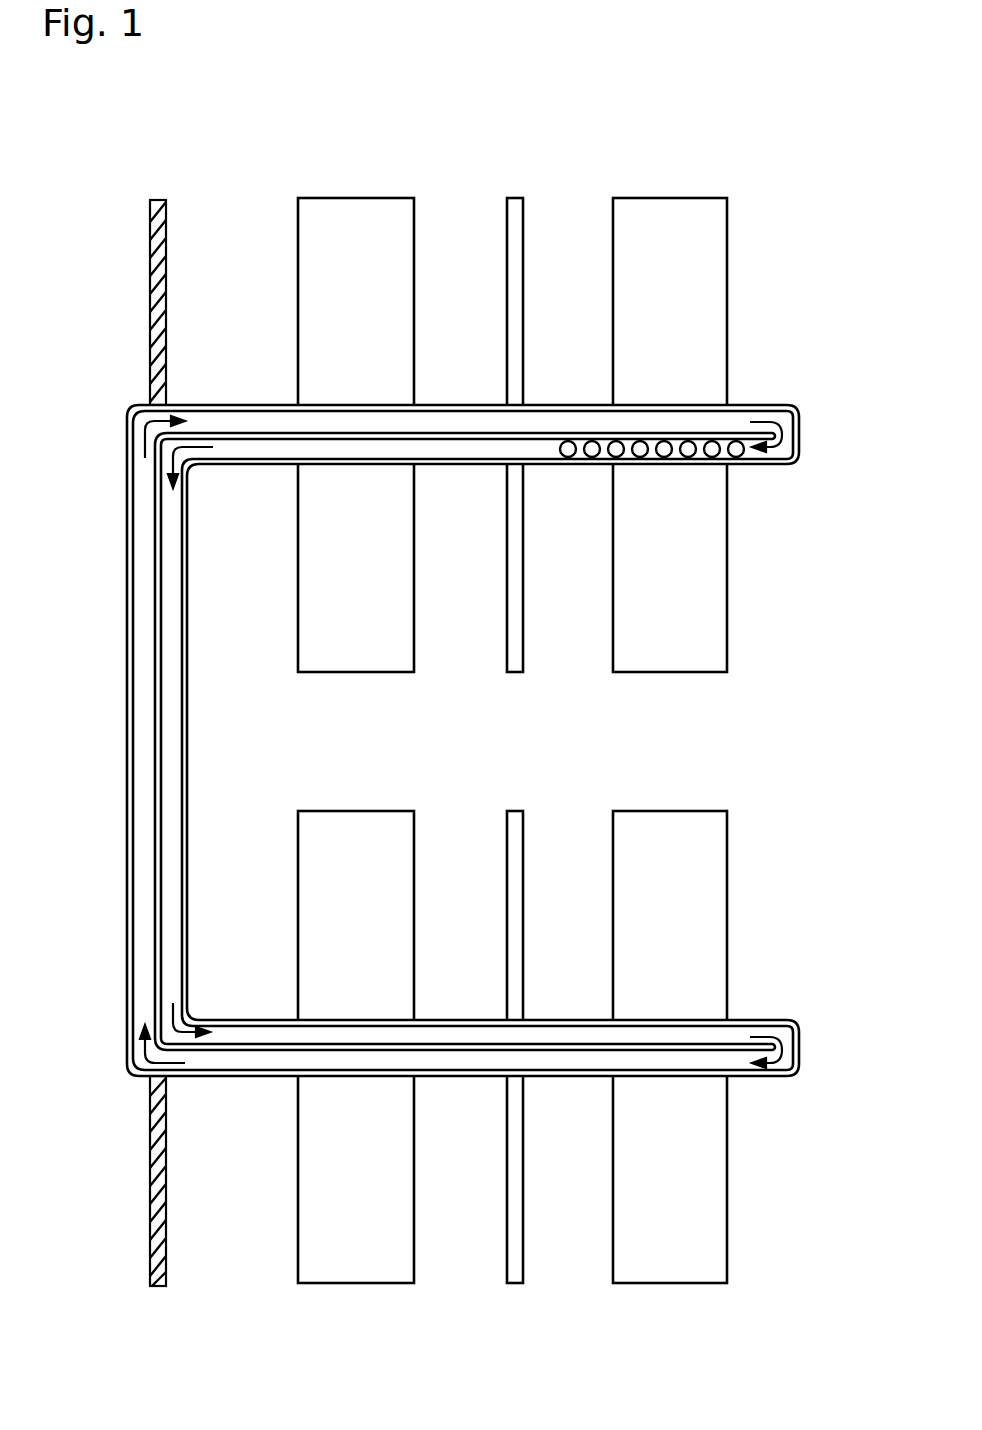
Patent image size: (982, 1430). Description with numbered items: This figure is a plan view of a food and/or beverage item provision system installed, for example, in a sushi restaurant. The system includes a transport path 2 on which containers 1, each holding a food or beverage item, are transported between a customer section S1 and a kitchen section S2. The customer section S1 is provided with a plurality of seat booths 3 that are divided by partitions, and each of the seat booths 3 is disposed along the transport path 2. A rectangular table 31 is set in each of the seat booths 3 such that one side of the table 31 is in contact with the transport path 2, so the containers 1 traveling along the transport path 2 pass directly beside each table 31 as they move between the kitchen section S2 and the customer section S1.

The container 1 is at (712, 458).
The transport path 2 is at (747, 405).
The seat booth 3 is at (526, 744).
The table 31 is at (318, 262).
The customer section S1 is at (493, 768).
The kitchen section S2 is at (52, 768).